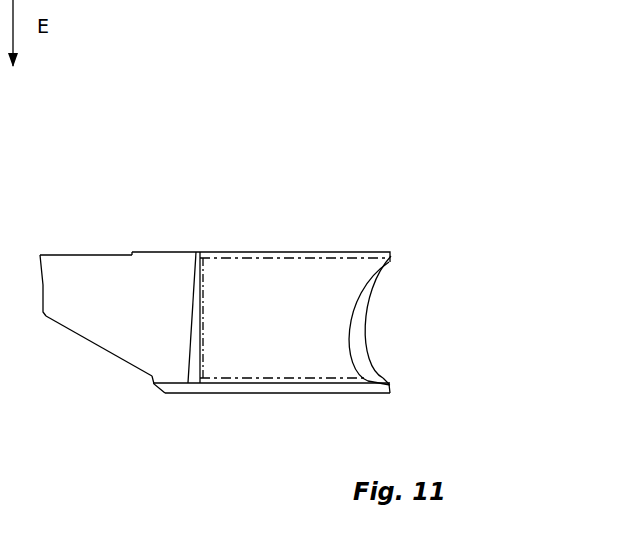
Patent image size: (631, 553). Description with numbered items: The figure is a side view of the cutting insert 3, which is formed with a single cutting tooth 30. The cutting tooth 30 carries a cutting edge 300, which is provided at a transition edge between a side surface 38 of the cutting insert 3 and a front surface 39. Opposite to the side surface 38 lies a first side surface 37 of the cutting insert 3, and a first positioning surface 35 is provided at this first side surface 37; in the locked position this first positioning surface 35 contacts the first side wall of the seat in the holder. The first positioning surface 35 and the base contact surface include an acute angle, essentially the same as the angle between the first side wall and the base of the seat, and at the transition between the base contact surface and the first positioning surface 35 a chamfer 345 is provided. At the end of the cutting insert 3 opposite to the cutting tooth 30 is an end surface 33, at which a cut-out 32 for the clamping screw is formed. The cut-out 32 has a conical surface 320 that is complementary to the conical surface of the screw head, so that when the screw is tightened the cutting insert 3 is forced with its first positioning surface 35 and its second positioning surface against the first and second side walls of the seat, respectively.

The cutting insert 3 is at (245, 110).
The cutting tooth 30 is at (115, 228).
The cutting edge 300 is at (60, 253).
The side surface 38 is at (273, 235).
The front surface 39 is at (43, 285).
The cut-out 32 is at (128, 338).
The conical surface 320 is at (363, 328).
The end surface 33 is at (389, 385).
The first positioning surface 35 is at (298, 383).
The chamfer 345 is at (333, 393).
The first side surface 37 is at (240, 410).